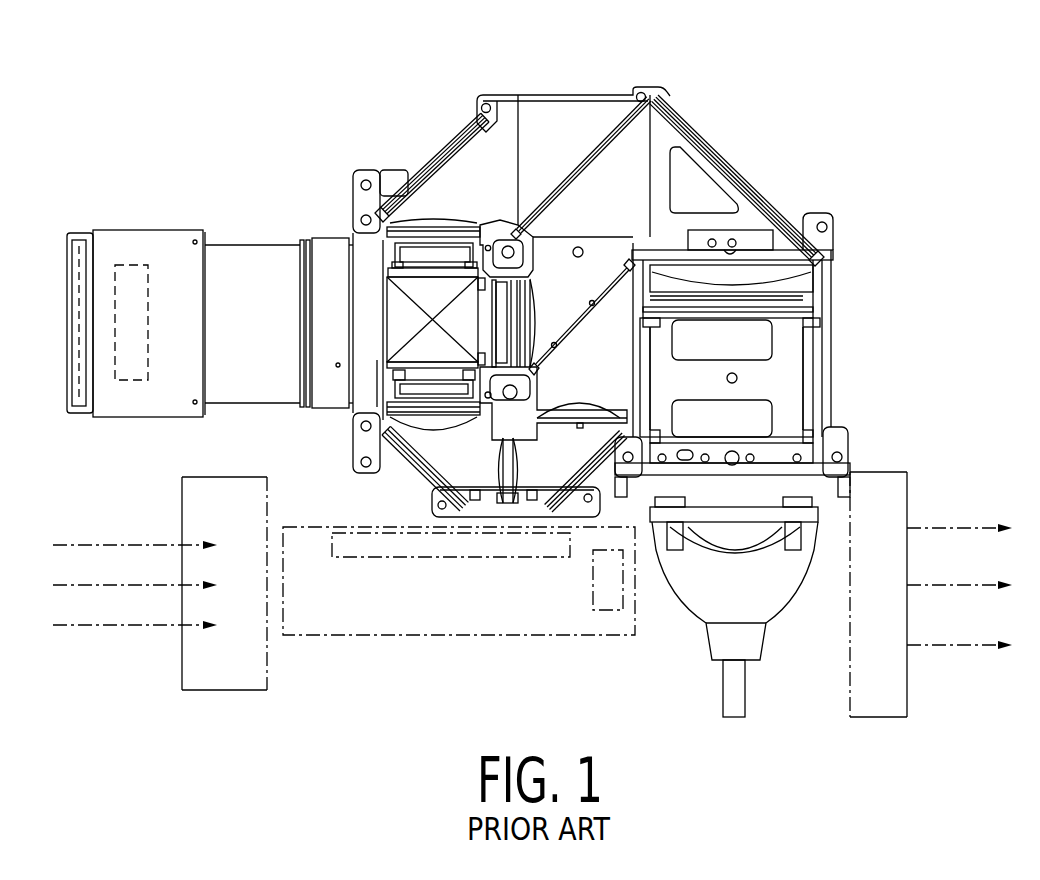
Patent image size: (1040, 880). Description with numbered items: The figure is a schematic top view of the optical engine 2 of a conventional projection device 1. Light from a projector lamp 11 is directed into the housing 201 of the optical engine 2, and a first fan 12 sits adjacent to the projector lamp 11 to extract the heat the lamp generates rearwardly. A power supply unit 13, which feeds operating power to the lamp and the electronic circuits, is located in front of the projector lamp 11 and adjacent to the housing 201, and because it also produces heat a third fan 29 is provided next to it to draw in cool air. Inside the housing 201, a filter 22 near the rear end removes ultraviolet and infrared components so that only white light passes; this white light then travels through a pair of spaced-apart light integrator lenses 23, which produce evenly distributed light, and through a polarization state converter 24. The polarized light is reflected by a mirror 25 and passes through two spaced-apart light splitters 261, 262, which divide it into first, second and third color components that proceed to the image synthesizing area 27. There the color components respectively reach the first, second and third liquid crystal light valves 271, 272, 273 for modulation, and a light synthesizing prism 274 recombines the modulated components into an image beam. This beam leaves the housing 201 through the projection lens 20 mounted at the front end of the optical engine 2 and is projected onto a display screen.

The projection device 1 is at (830, 128).
The optical engine 2 is at (712, 118).
The housing 201 is at (743, 163).
The projection lens 20 is at (212, 278).
The mirror 25 is at (770, 205).
The polarization state converter 24 is at (793, 298).
The light integrator lenses 23 is at (780, 310).
The filter 22 is at (763, 470).
The image synthesizing area 27 is at (387, 305).
The first liquid crystal light valve 271 is at (418, 253).
The second liquid crystal light valve 272 is at (500, 340).
The third liquid crystal light valve 273 is at (417, 388).
The light synthesizing prism 274 is at (400, 320).
The first light splitter 261 is at (583, 163).
The second light splitter 262 is at (582, 320).
The projector lamp 11 is at (763, 577).
The first fan 12 is at (907, 500).
The power supply unit 13 is at (403, 635).
The third fan 29 is at (182, 662).